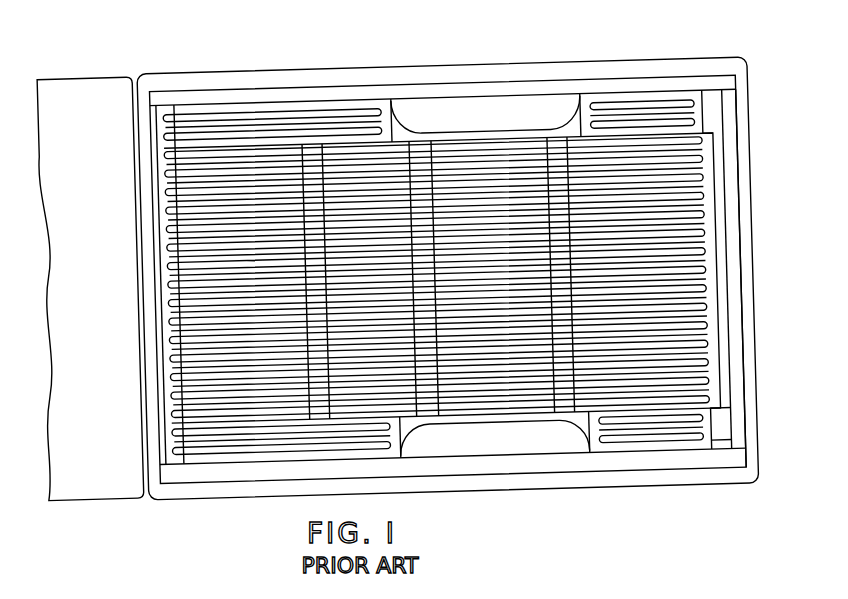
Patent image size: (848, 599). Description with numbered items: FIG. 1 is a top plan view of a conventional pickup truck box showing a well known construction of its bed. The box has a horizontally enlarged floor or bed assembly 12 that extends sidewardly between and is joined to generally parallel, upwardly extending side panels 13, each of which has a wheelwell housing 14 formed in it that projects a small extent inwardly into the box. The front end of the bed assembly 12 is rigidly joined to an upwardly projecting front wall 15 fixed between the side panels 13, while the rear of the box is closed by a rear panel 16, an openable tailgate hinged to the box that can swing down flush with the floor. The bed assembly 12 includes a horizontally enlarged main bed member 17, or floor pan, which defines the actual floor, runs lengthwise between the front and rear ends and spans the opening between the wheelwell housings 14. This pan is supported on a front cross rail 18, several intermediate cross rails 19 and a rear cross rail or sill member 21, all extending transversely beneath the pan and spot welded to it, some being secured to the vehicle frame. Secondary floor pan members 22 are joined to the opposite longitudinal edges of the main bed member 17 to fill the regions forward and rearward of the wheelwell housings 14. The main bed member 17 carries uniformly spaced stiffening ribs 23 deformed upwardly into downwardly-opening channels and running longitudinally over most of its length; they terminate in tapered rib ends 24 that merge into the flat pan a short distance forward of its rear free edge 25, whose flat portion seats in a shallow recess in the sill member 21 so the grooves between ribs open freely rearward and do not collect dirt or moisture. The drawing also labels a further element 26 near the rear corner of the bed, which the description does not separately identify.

The floor or bed assembly 12 is at (234, 447).
The side panels 13 is at (392, 78).
The wheelwell housings 14 is at (493, 110).
The front wall 15 is at (151, 432).
The rear panel 16 is at (733, 233).
The main bed member 17 is at (250, 180).
The front cross rail 18 is at (161, 115).
The intermediate cross rails 19 is at (322, 122).
The rear cross rail or sill member 21 is at (712, 108).
The secondary bed or floor pan members 22 is at (200, 127).
The stiffening ribs 23 is at (694, 210).
The tapered rib ends 24 is at (688, 216).
The rear free edge 25 is at (712, 148).
The bottom step member 26 is at (713, 393).